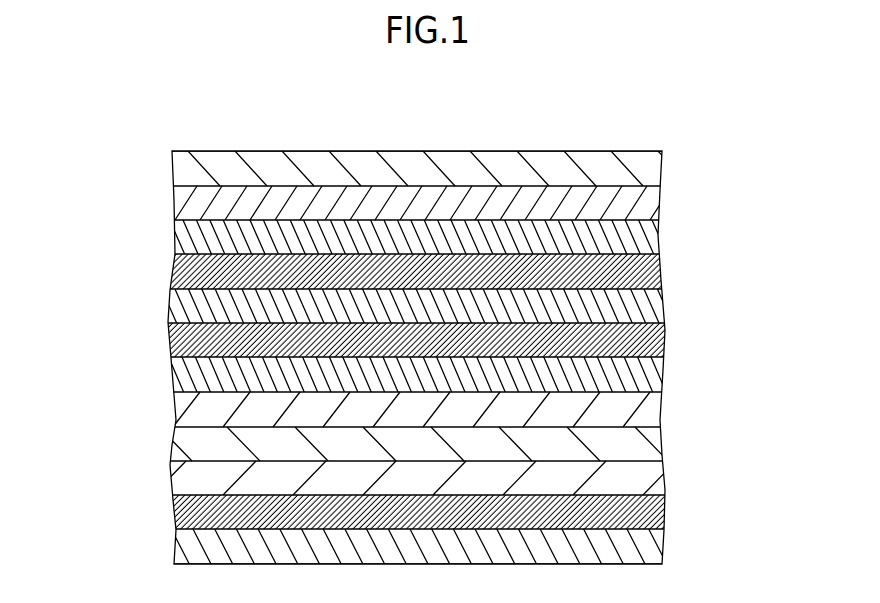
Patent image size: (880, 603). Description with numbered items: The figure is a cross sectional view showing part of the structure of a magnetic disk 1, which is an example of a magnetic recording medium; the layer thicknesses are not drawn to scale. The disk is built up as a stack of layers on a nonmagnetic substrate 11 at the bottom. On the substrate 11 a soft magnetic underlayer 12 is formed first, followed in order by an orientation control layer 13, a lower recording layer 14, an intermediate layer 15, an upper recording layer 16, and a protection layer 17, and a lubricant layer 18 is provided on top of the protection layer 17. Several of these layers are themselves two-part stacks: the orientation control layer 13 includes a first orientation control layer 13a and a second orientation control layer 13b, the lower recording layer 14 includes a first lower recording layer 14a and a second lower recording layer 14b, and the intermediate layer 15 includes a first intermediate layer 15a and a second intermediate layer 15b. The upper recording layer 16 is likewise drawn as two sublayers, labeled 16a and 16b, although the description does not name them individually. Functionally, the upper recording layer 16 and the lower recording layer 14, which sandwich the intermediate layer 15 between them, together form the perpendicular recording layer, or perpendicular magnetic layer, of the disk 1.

The magnetic disk 1 is at (634, 100).
The nonmagnetic substrate 11 is at (648, 547).
The soft magnetic underlayer 12 is at (648, 511).
The orientation control layer 13 is at (358, 461).
The first orientation control layer 13a is at (188, 476).
The second orientation control layer 13b is at (185, 446).
The lower recording layer 14 is at (458, 392).
The first lower recording layer 14a is at (648, 410).
The second lower recording layer 14b is at (648, 374).
The intermediate layer 15 is at (477, 323).
The first intermediate layer 15a is at (650, 341).
The second intermediate layer 15b is at (650, 305).
The upper recording layer 16 is at (475, 254).
The third light emitting sublayer 16a is at (648, 272).
The third light emitting sublayer 16b is at (648, 238).
The protection layer 17 is at (645, 203).
The lubricant layer 18 is at (645, 168).